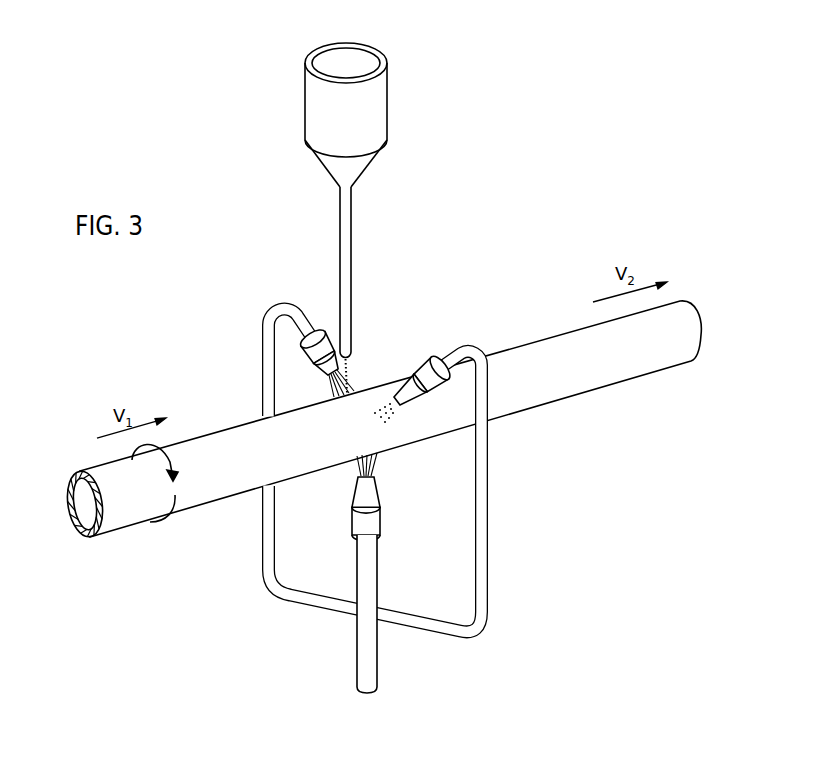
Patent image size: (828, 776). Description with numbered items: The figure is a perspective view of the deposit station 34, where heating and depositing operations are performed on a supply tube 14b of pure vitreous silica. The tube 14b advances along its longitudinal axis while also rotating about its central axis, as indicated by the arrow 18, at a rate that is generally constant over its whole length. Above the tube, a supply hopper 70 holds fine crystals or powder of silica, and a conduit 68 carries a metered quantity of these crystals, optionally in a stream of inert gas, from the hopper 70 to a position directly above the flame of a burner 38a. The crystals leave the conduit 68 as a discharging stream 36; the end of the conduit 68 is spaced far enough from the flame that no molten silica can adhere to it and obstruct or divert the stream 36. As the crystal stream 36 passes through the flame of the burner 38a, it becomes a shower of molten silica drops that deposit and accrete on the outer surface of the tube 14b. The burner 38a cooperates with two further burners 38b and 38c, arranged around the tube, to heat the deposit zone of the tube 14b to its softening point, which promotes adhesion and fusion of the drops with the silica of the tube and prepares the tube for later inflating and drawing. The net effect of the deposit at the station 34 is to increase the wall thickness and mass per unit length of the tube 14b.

The supply hopper 70 is at (388, 101).
The conduit 68 is at (351, 241).
The crystal stream 36 is at (350, 369).
The deposit station 34 is at (478, 196).
The burner 38a is at (325, 330).
The burner 38b is at (421, 356).
The burner 38c is at (381, 489).
The supply tube 14b is at (235, 428).
The arrow 18 is at (171, 519).